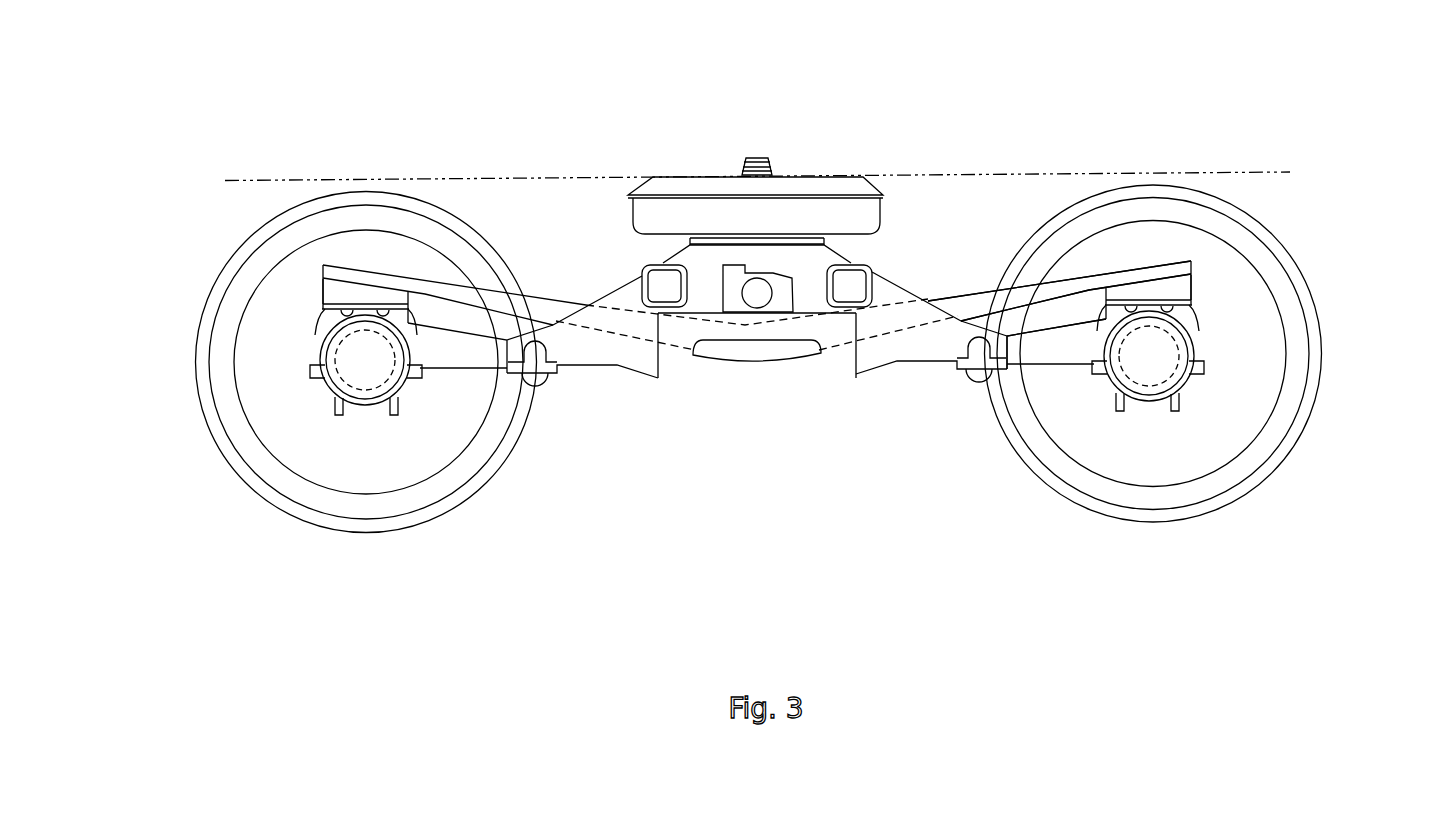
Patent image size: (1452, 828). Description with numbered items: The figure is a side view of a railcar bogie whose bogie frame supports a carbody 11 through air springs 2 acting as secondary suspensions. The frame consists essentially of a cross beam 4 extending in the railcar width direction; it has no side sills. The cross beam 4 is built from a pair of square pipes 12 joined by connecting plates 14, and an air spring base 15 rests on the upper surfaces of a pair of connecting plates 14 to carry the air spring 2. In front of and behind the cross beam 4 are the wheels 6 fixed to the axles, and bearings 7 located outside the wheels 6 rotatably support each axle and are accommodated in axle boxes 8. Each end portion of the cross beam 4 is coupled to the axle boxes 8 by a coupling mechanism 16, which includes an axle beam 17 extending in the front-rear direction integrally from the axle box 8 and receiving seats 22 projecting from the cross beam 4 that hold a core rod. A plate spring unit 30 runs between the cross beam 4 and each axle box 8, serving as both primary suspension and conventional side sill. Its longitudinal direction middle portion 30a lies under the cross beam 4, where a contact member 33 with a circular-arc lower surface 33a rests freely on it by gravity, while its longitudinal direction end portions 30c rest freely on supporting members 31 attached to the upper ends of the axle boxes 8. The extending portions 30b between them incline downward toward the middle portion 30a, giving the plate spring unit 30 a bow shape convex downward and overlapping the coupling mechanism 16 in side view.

The air spring 2 is at (840, 185).
The cross beam 4 is at (868, 268).
The wheel 6 is at (250, 242).
The bearing 7 is at (330, 393).
The axle box 8 is at (312, 373).
The carbody 11 is at (1289, 172).
The square pipe 12 is at (687, 308).
The connecting plate 14 is at (663, 263).
The air spring base 15 is at (718, 238).
The coupling mechanism 16 is at (551, 384).
The axle beam 17 is at (459, 368).
The receiving seat 22 is at (620, 358).
The plate spring unit 30 is at (970, 296).
The longitudinal direction middle portion 30a is at (762, 360).
The extending portion 30b is at (532, 297).
The longitudinal direction end portion 30c is at (365, 269).
The supporting member 31 is at (323, 294).
The contact member 33 is at (788, 325).
The circular-arc lower surface 33a is at (737, 327).